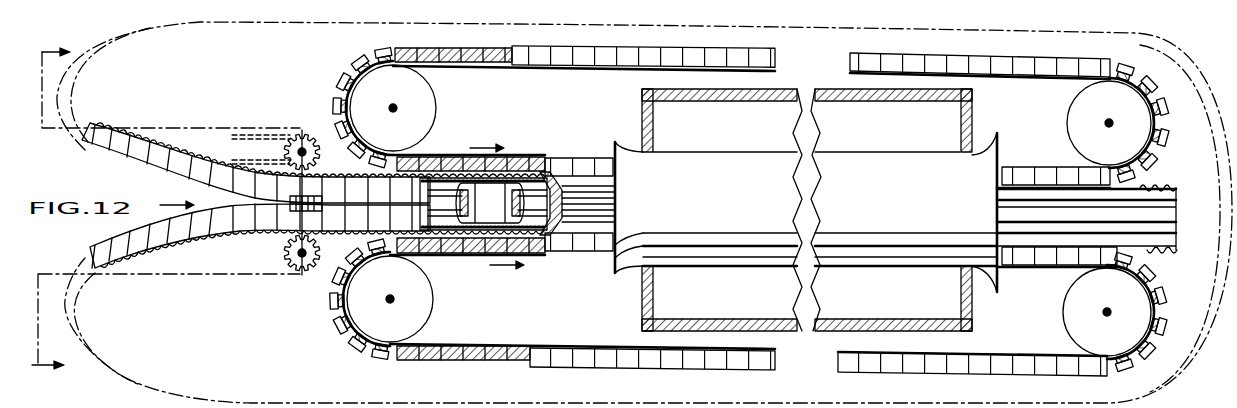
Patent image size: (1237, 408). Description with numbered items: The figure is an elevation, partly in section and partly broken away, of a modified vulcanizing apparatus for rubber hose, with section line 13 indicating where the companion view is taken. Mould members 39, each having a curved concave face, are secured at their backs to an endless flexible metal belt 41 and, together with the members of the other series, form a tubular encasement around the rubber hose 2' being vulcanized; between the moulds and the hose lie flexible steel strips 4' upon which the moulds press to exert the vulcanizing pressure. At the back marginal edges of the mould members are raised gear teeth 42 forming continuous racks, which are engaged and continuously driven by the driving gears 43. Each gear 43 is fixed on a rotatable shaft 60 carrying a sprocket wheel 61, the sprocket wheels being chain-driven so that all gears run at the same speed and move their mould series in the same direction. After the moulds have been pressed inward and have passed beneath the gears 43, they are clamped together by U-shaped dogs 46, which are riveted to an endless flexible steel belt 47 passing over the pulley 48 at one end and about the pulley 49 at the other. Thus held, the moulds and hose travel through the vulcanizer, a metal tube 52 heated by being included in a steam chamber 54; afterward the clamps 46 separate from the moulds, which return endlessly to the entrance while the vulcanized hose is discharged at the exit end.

The section line 13- 13 is at (166, 213).
The mould member 39 is at (122, 138).
The gear teeth 42 is at (147, 143).
The driving gear 43 is at (292, 141).
The rotatable shaft 60 is at (304, 144).
The sprocket wheel 61 is at (288, 151).
The pulley 49 is at (432, 104).
The pulley 48 is at (1073, 116).
The endless flexible steel belt 47 is at (597, 70).
The U-shaped dog 46 is at (545, 57).
The endless flexible metal belt 41 is at (571, 184).
The flexible steel strip 4' is at (483, 177).
The rubber hose 2' is at (487, 238).
The steam chamber 54 is at (653, 125).
The metal tube 52 is at (735, 160).